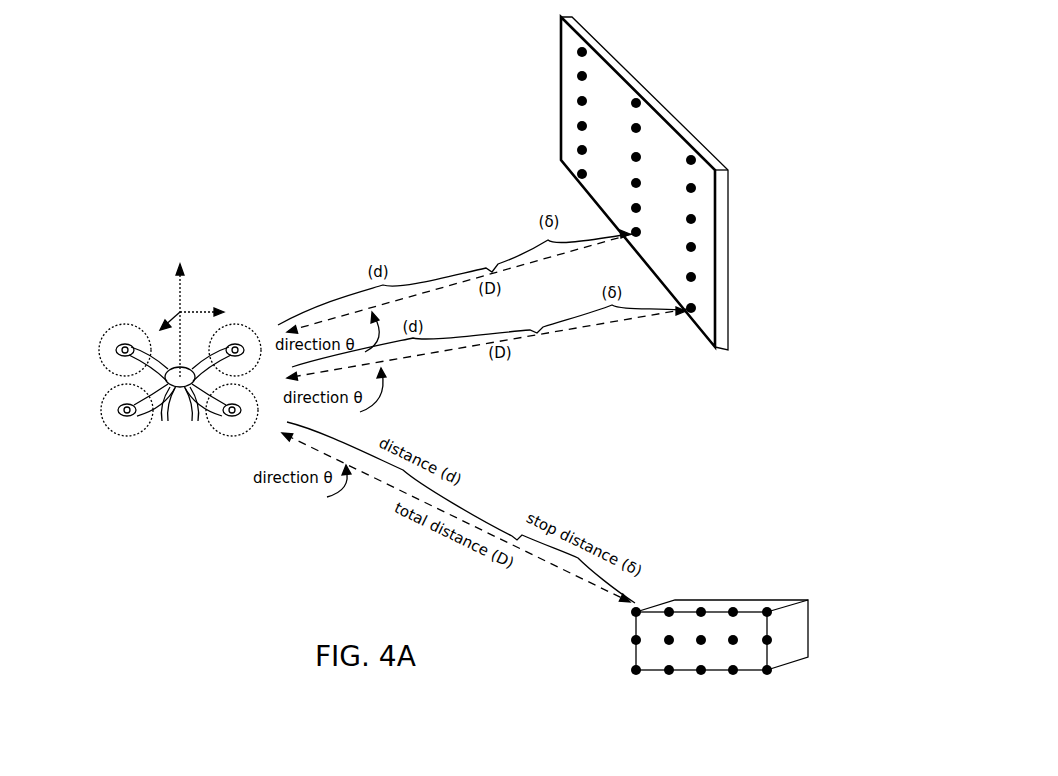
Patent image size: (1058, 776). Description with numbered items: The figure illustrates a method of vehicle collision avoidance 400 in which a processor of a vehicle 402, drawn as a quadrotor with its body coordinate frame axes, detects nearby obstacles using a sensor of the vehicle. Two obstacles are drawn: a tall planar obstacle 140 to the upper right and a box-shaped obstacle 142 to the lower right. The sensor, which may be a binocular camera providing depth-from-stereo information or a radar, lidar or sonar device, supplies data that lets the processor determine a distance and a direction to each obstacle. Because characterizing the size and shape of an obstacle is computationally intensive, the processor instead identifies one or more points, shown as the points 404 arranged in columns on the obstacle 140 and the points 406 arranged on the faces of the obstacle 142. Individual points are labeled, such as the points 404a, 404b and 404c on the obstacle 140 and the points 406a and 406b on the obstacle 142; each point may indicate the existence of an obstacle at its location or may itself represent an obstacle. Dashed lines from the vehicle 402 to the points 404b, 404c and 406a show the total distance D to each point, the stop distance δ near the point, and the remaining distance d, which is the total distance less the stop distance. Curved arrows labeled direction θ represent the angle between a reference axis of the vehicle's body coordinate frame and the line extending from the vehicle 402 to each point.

The obstacle 140 is at (625, 66).
The obstacle 142 is at (778, 600).
The method of vehicle collision avoidance 400 is at (198, 138).
The vehicle 402 is at (112, 425).
The points 404 is at (580, 148).
The point 404a is at (580, 173).
The point 404b is at (634, 230).
The point 404c is at (694, 310).
The points 406 is at (702, 610).
The point 406a is at (637, 610).
The point 406b is at (669, 610).